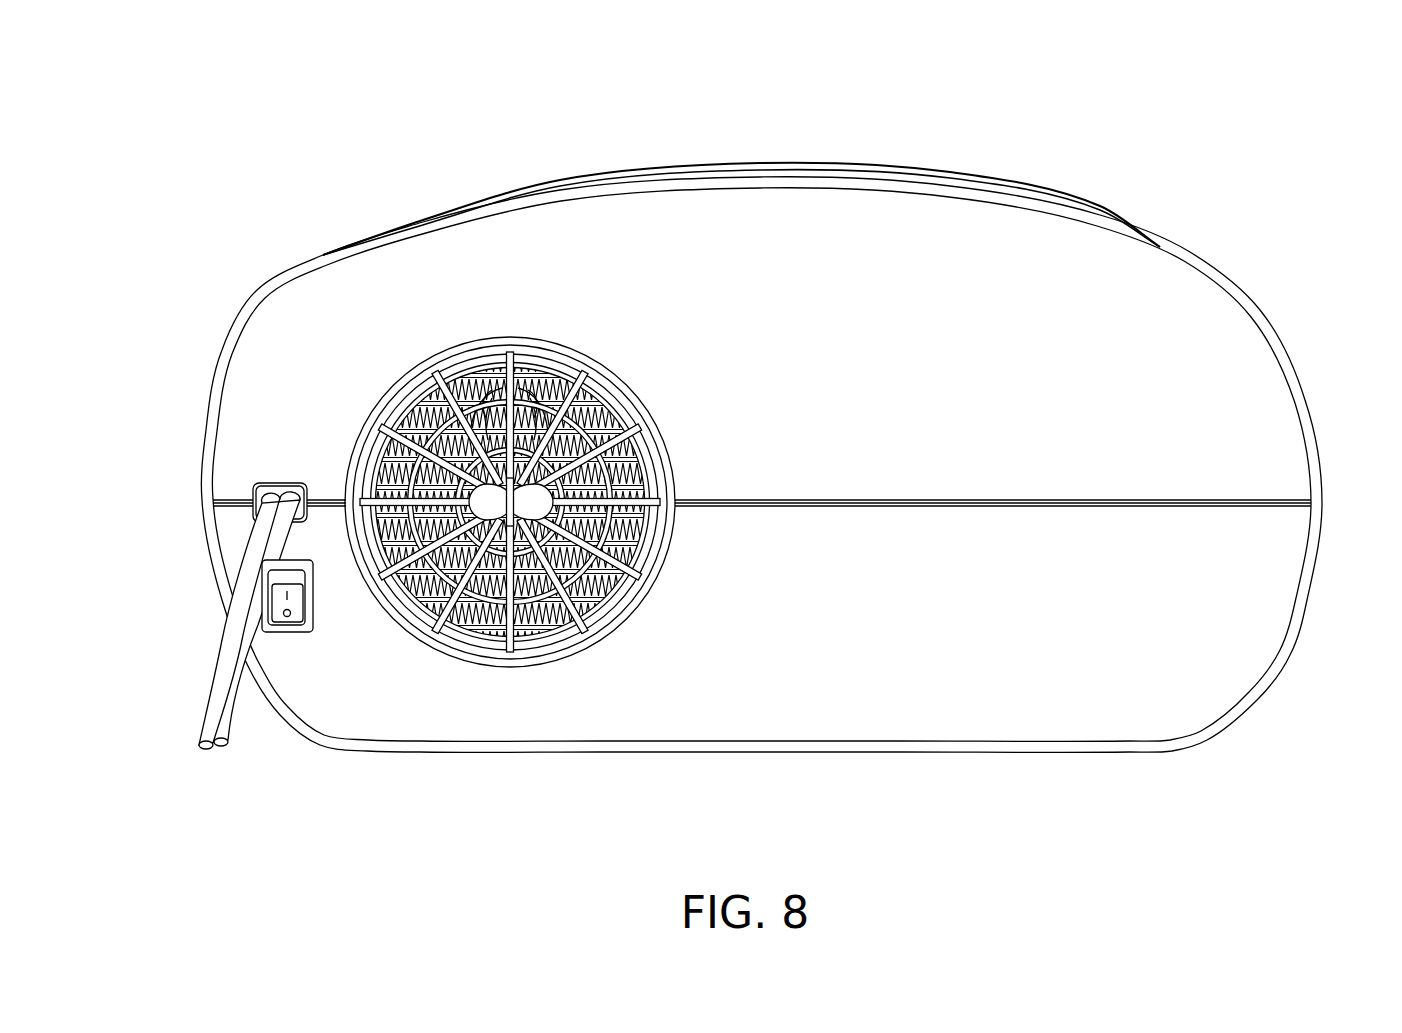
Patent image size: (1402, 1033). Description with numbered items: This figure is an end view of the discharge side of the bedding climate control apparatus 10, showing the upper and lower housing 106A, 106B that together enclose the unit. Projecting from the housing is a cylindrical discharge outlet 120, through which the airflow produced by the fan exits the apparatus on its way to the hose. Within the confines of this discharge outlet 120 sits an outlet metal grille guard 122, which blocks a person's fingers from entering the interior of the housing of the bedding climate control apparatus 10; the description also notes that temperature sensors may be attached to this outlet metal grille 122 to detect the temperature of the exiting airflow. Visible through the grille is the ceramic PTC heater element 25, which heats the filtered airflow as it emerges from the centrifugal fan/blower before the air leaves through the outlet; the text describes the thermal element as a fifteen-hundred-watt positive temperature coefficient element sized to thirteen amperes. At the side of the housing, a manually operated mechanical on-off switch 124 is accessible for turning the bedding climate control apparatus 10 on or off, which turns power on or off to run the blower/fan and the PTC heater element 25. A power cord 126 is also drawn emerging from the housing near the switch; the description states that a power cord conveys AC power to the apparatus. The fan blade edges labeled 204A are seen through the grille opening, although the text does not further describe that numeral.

The bedding climate control apparatus 10 is at (782, 396).
The PTC heater element 25 is at (443, 400).
The upper housing 106A is at (1140, 281).
The lower housing 106B is at (1237, 667).
The projecting cylindrical discharge outlet 120 is at (572, 344).
The outlet metal grille guard 122 is at (604, 406).
The manually operated mechanical on-off switch 124 is at (293, 626).
The power cord 126 is at (206, 748).
The fan blade 204A is at (538, 405).